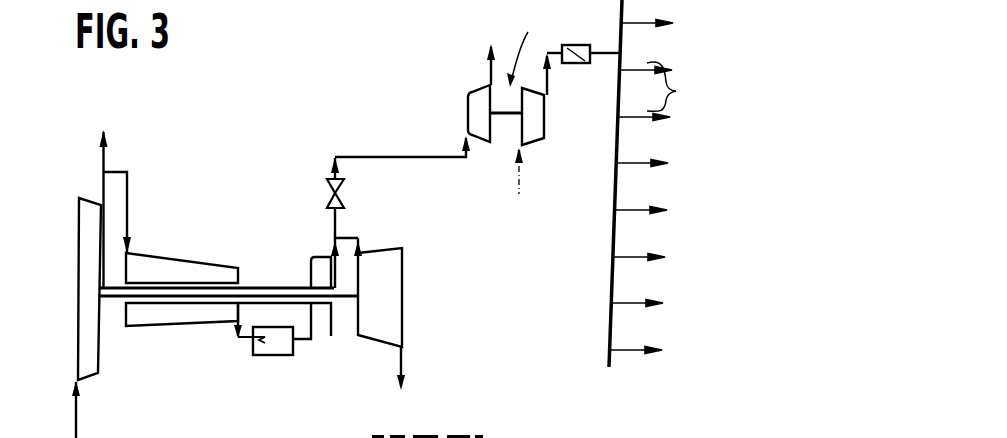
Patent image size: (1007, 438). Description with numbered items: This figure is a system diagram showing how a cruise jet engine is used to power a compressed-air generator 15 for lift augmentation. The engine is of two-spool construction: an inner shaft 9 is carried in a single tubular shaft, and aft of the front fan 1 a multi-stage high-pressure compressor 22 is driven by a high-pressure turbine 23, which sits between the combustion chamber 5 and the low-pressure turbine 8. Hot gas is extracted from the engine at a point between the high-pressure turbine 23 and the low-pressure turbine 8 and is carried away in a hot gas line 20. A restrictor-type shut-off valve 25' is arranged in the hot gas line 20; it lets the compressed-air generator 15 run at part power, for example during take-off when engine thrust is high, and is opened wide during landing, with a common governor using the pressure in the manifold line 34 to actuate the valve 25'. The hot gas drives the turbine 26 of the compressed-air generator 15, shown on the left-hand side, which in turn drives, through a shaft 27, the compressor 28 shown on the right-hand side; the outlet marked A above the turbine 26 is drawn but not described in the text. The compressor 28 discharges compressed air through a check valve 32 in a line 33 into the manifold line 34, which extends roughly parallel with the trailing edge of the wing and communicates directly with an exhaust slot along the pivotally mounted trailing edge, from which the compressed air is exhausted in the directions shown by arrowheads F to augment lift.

The front fan 1 is at (76, 343).
The inner shaft 9 is at (112, 289).
The high-pressure compressor 22 is at (198, 320).
The combustion chamber 5 is at (281, 350).
The high-pressure turbine 23 is at (328, 334).
The low-pressure turbine 8 is at (390, 310).
The shut-off valve 25' is at (312, 190).
The hot gas line 20 is at (383, 159).
The turbine 26 is at (468, 108).
The air outlet A is at (490, 73).
The shaft 27 is at (500, 116).
The compressor 28 is at (537, 127).
The compressed-air generator 15 is at (529, 51).
The line 33 is at (603, 56).
The check valve 32 is at (583, 45).
The manifold line 34 is at (615, 193).
The arrowheads F is at (671, 86).